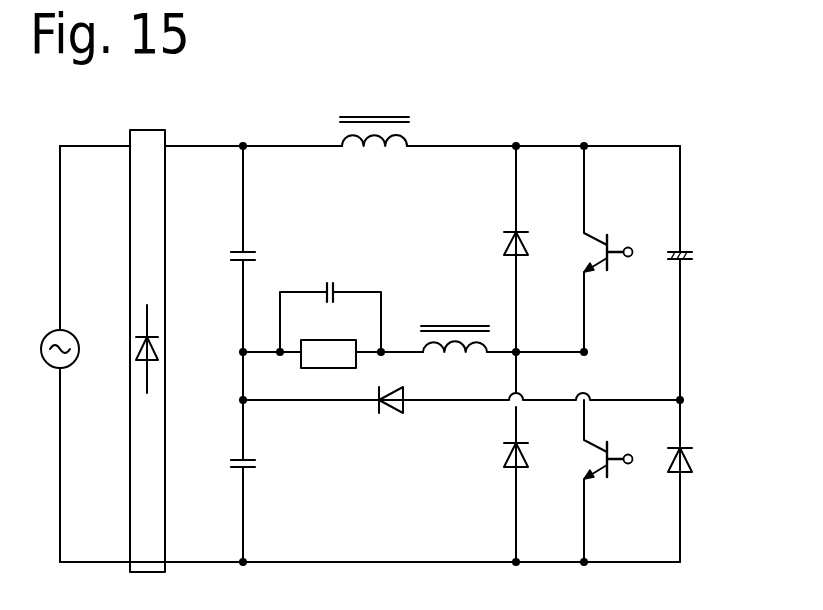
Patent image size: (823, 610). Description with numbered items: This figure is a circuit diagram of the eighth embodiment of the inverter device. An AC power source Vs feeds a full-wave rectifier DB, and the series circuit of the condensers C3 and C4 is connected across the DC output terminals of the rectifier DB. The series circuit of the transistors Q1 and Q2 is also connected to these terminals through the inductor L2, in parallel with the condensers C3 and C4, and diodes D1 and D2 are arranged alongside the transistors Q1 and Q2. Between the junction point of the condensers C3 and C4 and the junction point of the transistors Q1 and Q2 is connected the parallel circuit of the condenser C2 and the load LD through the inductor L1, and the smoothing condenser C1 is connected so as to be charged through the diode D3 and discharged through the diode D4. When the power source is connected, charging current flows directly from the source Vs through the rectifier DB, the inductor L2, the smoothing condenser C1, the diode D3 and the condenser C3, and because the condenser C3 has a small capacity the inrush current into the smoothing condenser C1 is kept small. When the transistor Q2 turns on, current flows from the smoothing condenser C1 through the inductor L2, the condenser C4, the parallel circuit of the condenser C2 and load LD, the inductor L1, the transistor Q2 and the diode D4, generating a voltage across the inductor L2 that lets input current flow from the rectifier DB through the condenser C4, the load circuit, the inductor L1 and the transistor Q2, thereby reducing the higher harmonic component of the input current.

The AC power source Vs is at (48, 360).
The full-wave rectifier DB is at (149, 333).
The inductor L2 is at (374, 116).
The inductor L1 is at (455, 323).
The smoothing condenser C1 is at (703, 254).
The condenser C2 is at (330, 303).
The condenser C3 is at (262, 477).
The condenser C4 is at (262, 248).
The load LD is at (328, 355).
The diode D1 is at (495, 241).
The diode D2 is at (497, 465).
The diode D3 is at (391, 420).
The diode D4 is at (703, 468).
The transistor Q1 is at (608, 271).
The transistor Q2 is at (608, 480).